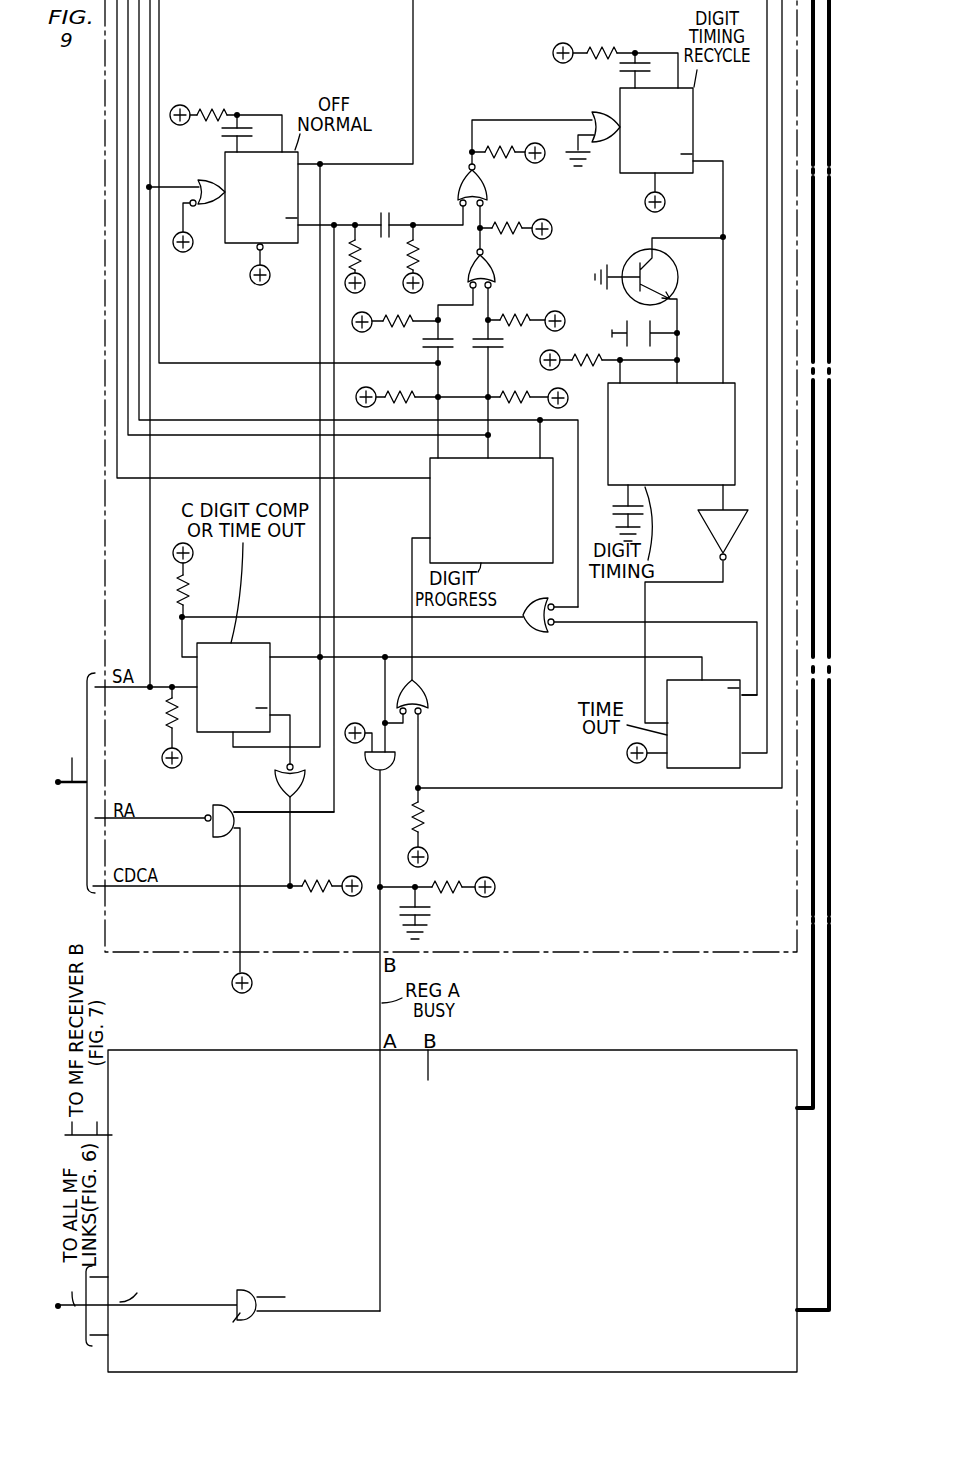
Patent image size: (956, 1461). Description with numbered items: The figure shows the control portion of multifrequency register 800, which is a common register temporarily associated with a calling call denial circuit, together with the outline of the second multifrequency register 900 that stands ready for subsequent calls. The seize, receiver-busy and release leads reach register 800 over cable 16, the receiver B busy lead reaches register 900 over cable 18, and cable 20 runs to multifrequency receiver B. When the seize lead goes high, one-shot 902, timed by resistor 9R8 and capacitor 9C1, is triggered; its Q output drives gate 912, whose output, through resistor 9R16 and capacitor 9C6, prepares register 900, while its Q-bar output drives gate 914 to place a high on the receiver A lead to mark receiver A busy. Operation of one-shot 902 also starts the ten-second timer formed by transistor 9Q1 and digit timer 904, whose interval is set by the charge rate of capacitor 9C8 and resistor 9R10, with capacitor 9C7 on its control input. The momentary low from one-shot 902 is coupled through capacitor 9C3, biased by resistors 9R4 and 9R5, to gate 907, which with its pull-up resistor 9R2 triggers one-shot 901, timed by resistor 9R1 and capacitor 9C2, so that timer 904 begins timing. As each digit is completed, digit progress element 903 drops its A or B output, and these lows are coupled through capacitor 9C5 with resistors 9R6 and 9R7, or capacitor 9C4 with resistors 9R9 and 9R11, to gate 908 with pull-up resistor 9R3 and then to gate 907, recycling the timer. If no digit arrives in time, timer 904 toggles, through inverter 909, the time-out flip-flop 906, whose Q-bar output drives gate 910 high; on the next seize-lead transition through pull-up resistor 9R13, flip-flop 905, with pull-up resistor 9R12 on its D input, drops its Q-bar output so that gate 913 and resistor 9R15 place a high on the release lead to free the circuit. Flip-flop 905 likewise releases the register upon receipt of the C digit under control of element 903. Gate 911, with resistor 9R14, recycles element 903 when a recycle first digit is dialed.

The one-shot 901 is at (694, 111).
The one-shot 902 is at (283, 243).
The digit progress element 903 is at (430, 504).
The digit timer 904 is at (688, 486).
The flip-flop 905 is at (244, 644).
The time out flip-flop 906 is at (722, 680).
The gate 907 is at (461, 185).
The gate 908 is at (490, 283).
The inverter 909 is at (706, 535).
The gate 910 is at (540, 598).
The gate 911 is at (429, 702).
The gate 912 is at (372, 771).
The gate 913 is at (275, 777).
The gate 914 is at (222, 838).
The multifrequency register 800 is at (672, 951).
The multifrequency register 900 is at (681, 1050).
The cable 16 is at (75, 710).
The cable 18 is at (73, 1306).
The cable 20 is at (88, 1118).
The resistor 9R1 is at (615, 55).
The resistor 9R2 is at (508, 167).
The resistor 9R3 is at (516, 243).
The resistor 9R4 is at (370, 259).
The resistor 9R5 is at (428, 259).
The resistor 9R6 is at (395, 307).
The resistor 9R7 is at (397, 387).
The resistor 9R8 is at (226, 118).
The resistor 9R9 is at (526, 313).
The resistor 9R10 is at (608, 355).
The resistor 9R11 is at (528, 388).
The resistor 9R12 is at (199, 580).
The resistor 9R13 is at (153, 727).
The resistor 9R14 is at (438, 827).
The resistor 9R15 is at (316, 880).
The resistor 9R16 is at (437, 880).
The capacitor 9C1 is at (222, 134).
The capacitor 9C2 is at (619, 72).
The capacitor 9C3 is at (382, 210).
The capacitor 9C4 is at (475, 329).
The capacitor 9C5 is at (421, 349).
The capacitor 9C6 is at (432, 912).
The capacitor 9C7 is at (616, 508).
The capacitor 9C8 is at (662, 345).
The transistor 9Q1 is at (641, 255).